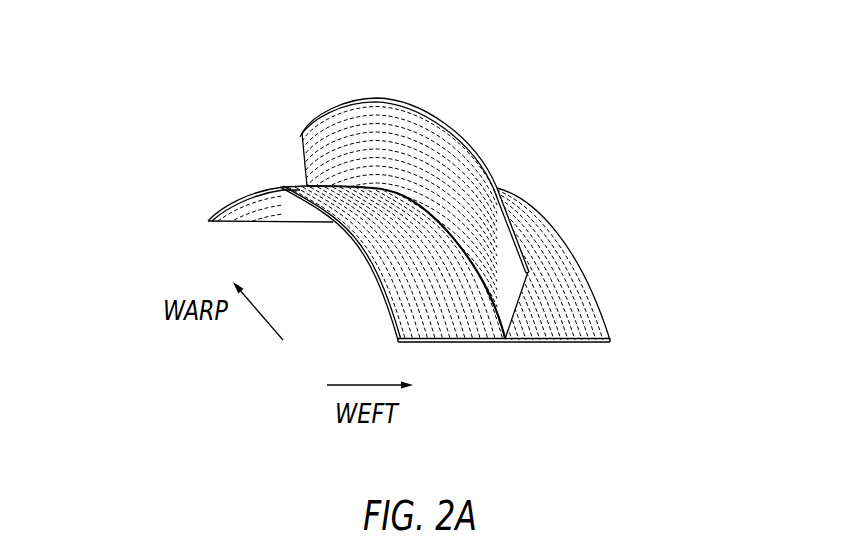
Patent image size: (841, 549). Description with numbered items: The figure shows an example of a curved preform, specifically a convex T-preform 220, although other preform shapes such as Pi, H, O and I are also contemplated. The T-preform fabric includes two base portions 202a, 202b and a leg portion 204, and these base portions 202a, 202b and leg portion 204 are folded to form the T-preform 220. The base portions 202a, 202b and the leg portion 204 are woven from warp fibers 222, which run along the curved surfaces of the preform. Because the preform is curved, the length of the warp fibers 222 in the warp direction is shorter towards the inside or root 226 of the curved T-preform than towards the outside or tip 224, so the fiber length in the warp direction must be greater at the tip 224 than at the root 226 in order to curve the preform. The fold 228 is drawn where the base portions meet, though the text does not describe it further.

The T-preform 220 is at (212, 86).
The base portion 202a is at (442, 317).
The base portion 202b is at (580, 343).
The leg portion 204 is at (359, 96).
The warp fibers 222 is at (498, 247).
The tip 224 is at (323, 112).
The root 226 is at (222, 204).
The fold 228 is at (507, 343).